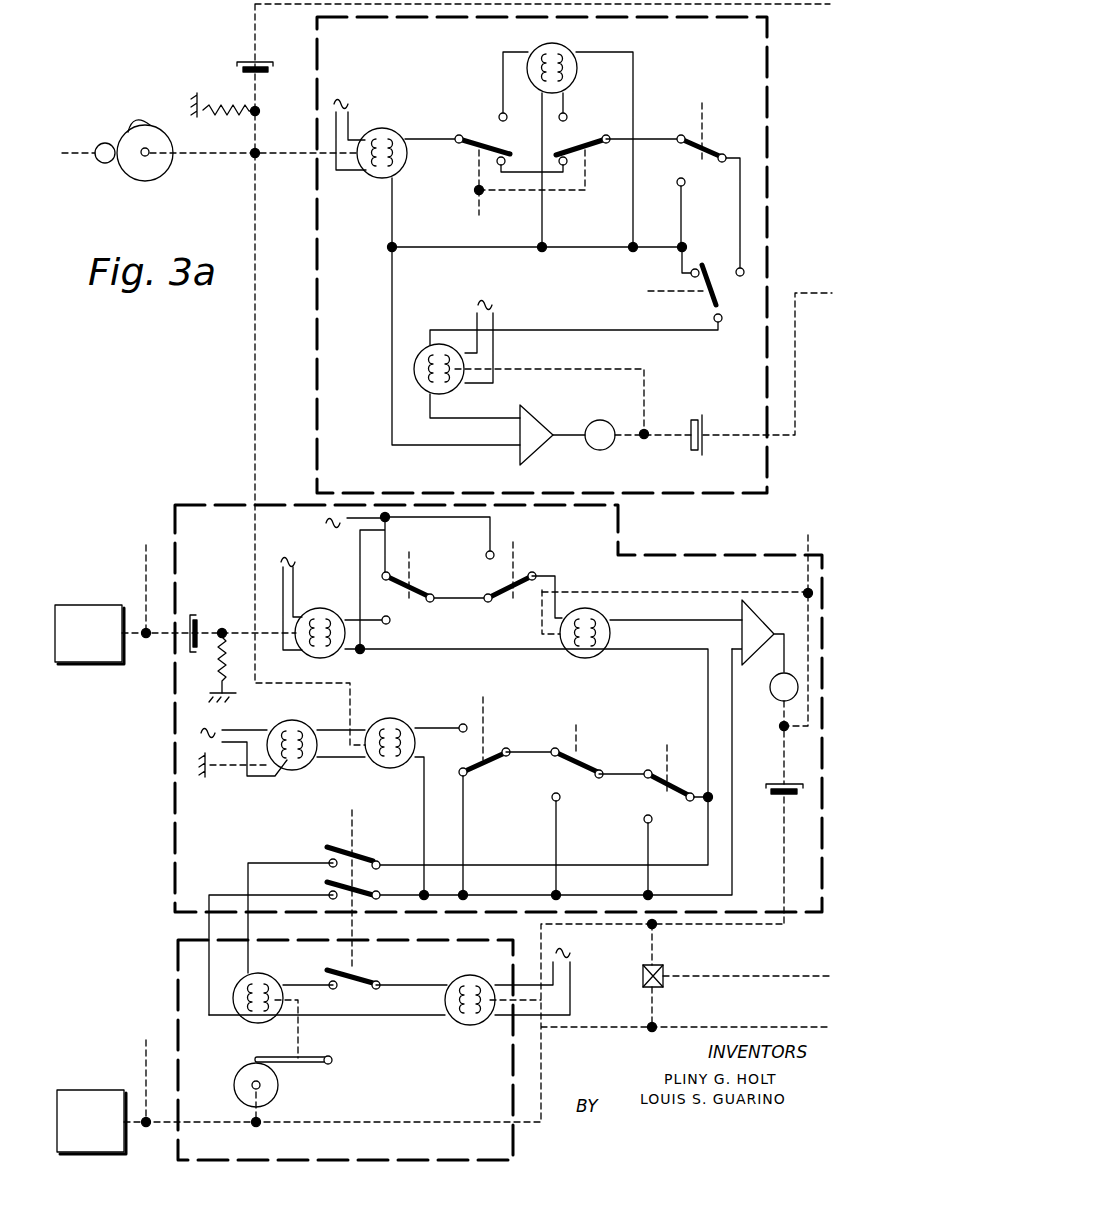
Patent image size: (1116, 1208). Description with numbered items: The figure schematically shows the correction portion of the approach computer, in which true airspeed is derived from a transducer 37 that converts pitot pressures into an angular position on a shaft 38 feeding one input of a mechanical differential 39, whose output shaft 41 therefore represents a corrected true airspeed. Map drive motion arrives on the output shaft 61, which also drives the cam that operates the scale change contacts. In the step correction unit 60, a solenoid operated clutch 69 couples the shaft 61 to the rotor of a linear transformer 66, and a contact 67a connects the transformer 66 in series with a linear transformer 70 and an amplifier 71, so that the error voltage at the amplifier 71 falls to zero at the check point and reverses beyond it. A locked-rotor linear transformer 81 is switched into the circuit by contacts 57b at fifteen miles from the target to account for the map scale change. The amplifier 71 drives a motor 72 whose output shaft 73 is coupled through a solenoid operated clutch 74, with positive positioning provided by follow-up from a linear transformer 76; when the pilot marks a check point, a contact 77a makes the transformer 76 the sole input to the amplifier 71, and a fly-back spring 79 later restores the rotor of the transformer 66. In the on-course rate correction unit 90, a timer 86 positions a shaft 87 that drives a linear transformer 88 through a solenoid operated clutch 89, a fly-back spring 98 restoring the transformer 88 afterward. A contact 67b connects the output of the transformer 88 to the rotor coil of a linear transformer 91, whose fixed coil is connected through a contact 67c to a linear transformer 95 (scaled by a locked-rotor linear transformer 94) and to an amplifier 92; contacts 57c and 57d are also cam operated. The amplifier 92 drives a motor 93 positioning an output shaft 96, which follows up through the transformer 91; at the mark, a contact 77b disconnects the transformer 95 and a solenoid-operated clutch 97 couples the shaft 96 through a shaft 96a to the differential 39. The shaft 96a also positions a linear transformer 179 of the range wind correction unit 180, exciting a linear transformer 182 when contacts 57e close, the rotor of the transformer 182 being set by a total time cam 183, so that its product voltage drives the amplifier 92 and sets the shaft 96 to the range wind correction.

The output shaft 61 is at (250, 11).
The solenoid operated clutch 69 is at (247, 58).
The fly-back spring 79 is at (240, 117).
The linear transformer 70 is at (145, 181).
The step correction unit 60 is at (767, 188).
The locked-rotor linear transformer 81 is at (542, 42).
The linear transformer 66 is at (374, 122).
The contacts 57b is at (552, 140).
The contact 77a is at (702, 168).
The contact 67a is at (722, 290).
The linear transformer 76 is at (420, 348).
The output shaft 73 is at (646, 380).
The amplifier 71 is at (535, 414).
The motor 72 is at (592, 420).
The solenoid operated clutch 74 is at (712, 448).
The on-course rate correction unit 90 is at (175, 828).
The timer 86 is at (75, 604).
The shaft 87 is at (144, 589).
The solenoid operated clutch 89 is at (206, 650).
The fly-back spring 98 is at (216, 682).
The linear transformer 88 is at (308, 608).
The contact 67b is at (418, 602).
The contacts 57c is at (514, 600).
The linear transformer 91 is at (591, 658).
The output shaft 96 is at (806, 608).
The amplifier 92 is at (742, 634).
The motor 93 is at (775, 702).
The solenoid-operated clutch 97 is at (778, 798).
The shaft 96a is at (756, 928).
The linear transformer 95 is at (396, 716).
The linear transformer 94 is at (300, 772).
The contact 67c is at (490, 773).
The contact 77b is at (578, 776).
The contacts 57d is at (662, 800).
The contacts 57e is at (370, 864).
The range wind correction unit 180 is at (178, 983).
The linear transformer 182 is at (272, 976).
The linear transformer 179 is at (480, 976).
The total time cam 183 is at (280, 1086).
The transducer 37 is at (80, 1090).
The shaft 38 is at (192, 1122).
The mechanical differential 39 is at (642, 970).
The output shaft 41 is at (754, 976).